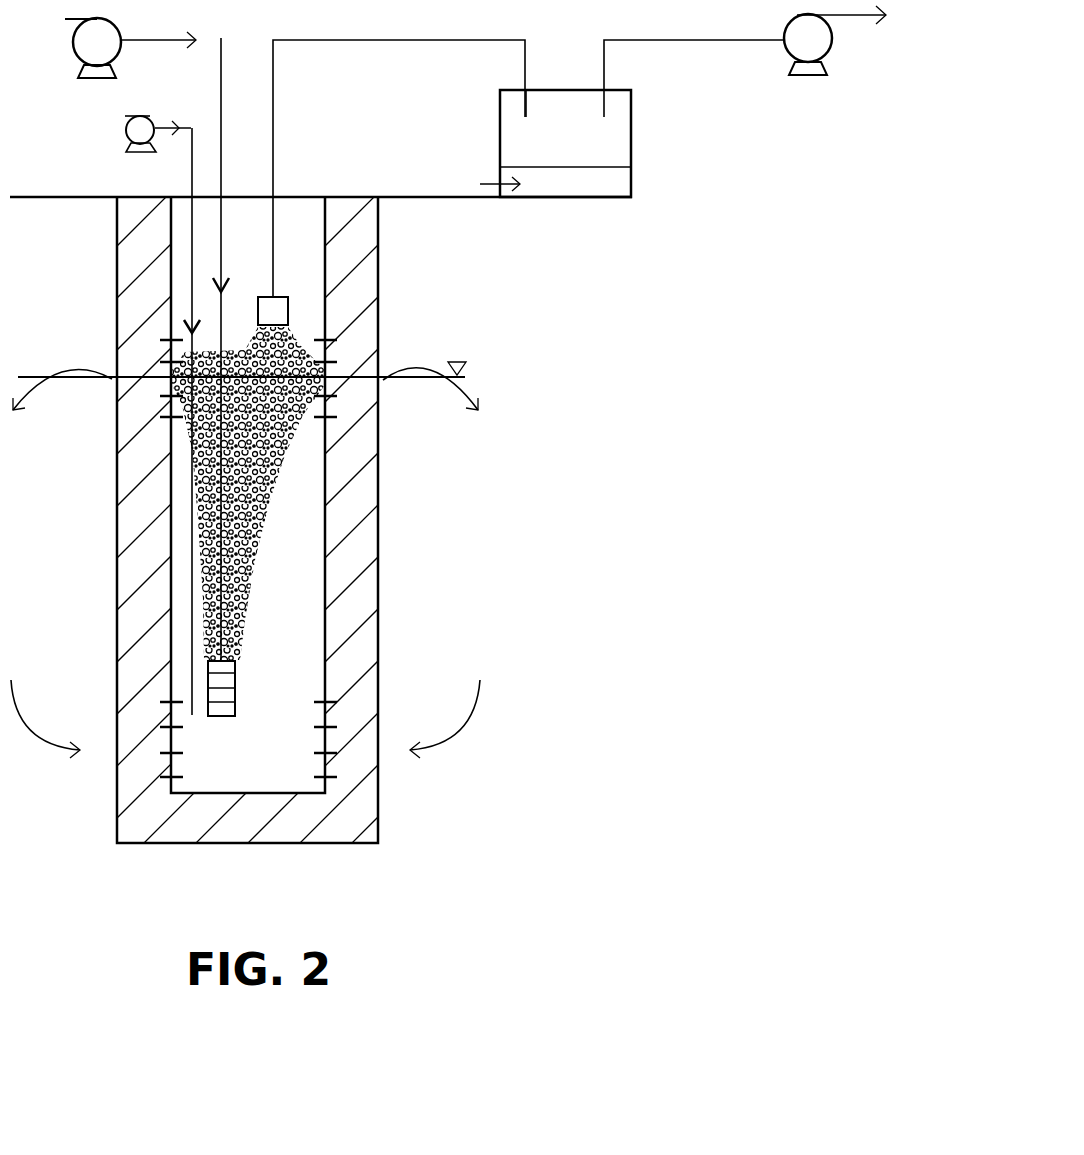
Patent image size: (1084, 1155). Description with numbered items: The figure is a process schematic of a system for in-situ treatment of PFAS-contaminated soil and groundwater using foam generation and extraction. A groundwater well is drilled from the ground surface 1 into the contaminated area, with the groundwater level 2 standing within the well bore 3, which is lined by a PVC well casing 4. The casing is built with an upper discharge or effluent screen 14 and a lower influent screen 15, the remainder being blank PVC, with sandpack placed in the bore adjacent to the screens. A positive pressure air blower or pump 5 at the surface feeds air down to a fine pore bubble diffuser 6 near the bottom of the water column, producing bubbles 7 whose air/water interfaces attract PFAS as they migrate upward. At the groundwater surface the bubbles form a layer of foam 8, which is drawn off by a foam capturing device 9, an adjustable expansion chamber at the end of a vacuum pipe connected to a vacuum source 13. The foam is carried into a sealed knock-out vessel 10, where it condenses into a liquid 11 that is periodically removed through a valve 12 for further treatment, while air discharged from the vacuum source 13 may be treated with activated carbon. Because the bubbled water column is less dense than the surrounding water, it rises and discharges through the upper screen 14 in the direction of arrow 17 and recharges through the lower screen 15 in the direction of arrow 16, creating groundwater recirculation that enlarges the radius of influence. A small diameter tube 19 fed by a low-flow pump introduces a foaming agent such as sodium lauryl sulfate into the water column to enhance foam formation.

The ground surface 1 is at (82, 197).
The groundwater level 2 is at (82, 374).
The well bore 3 is at (116, 522).
The well casing 4 is at (170, 571).
The positive pressure air blower or pump 5 is at (92, 42).
The bubble diffuser 6 is at (229, 680).
The bubbles 7 is at (262, 491).
The foam 8 is at (196, 348).
The foam capturing device 9 is at (274, 310).
The knock-out vessel 10 is at (549, 143).
The liquid 11 is at (490, 184).
The valve 12 is at (586, 170).
The vacuum source 13 is at (812, 42).
The upper discharge or effluent screen 14 is at (324, 397).
The lower influent screen 15 is at (325, 733).
The arrow 16 is at (245, 719).
The arrow 17 is at (245, 391).
The small diameter tube 19 is at (162, 415).